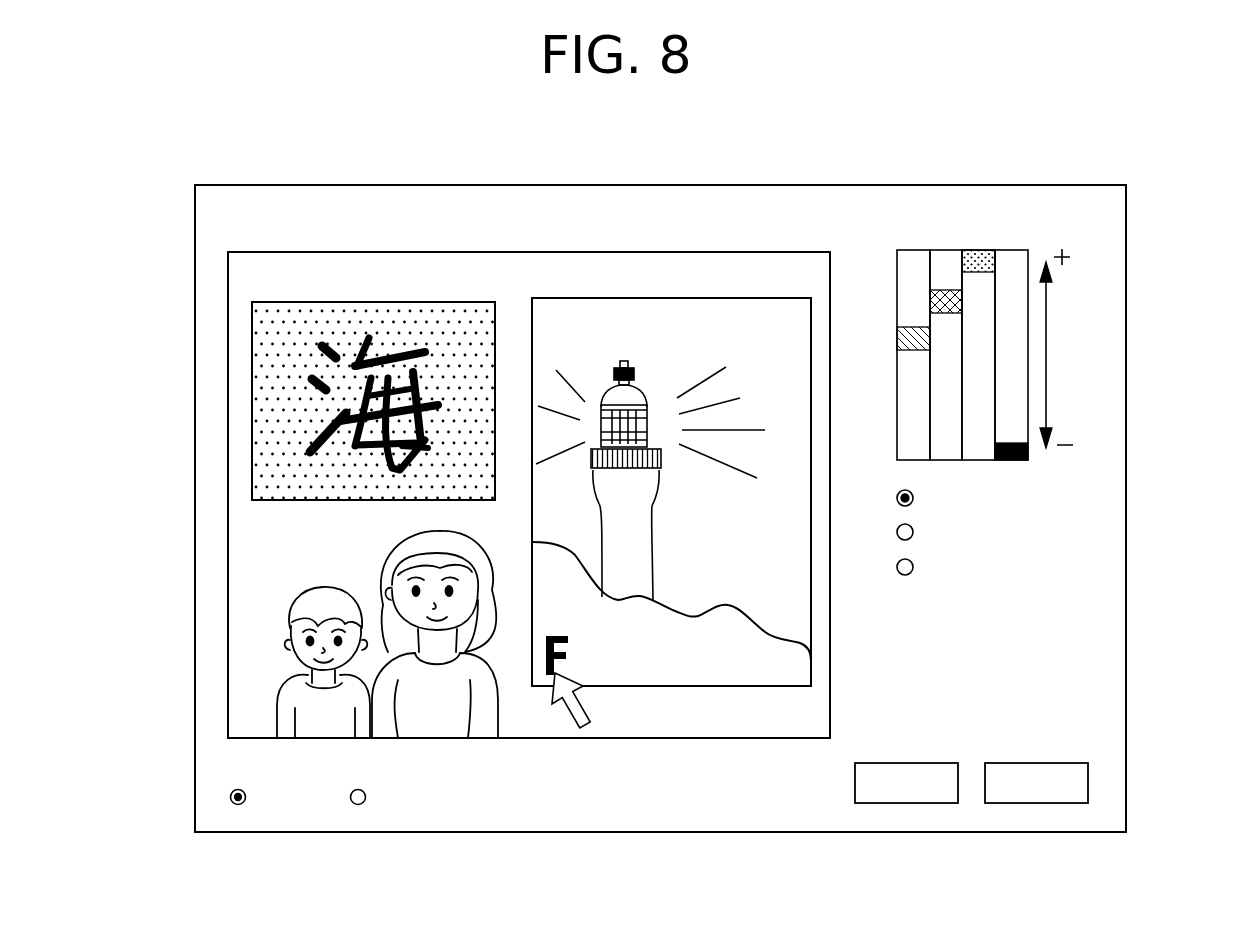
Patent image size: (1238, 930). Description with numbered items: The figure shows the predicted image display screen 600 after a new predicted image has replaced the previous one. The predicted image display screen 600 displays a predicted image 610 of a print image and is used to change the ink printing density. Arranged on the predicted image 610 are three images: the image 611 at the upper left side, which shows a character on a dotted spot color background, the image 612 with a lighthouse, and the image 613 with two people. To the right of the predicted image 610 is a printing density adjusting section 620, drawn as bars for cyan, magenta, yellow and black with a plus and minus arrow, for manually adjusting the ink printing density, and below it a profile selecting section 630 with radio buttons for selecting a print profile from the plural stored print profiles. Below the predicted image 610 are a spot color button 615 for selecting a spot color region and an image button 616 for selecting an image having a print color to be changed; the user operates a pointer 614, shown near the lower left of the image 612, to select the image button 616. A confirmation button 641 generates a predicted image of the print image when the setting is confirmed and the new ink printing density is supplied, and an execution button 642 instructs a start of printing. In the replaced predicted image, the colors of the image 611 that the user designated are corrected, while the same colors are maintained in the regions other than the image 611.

The predicted image display screen 600 is at (962, 185).
The predicted image 610 is at (720, 252).
The image 611 is at (352, 302).
The image 612 is at (705, 298).
The image 613 is at (250, 677).
The pointer 614 is at (591, 710).
The spot color button 615 is at (272, 818).
The image button 616 is at (398, 818).
The printing density adjusting section 620 is at (1017, 262).
The profile selecting section 630 is at (1098, 520).
The confirmation button 641 is at (907, 763).
The execution button 642 is at (1033, 763).